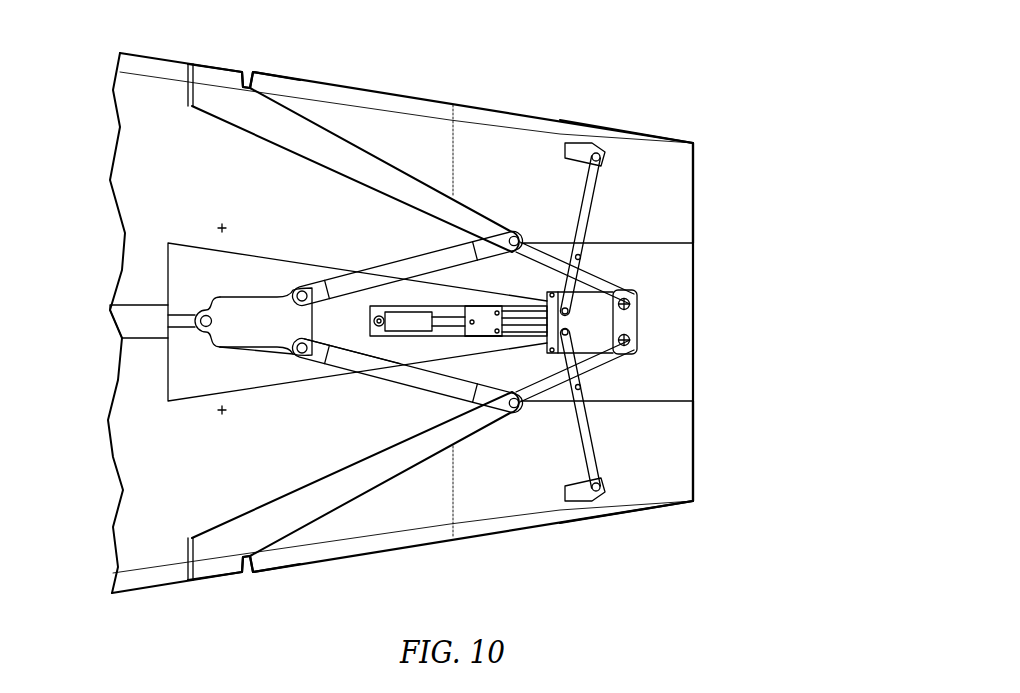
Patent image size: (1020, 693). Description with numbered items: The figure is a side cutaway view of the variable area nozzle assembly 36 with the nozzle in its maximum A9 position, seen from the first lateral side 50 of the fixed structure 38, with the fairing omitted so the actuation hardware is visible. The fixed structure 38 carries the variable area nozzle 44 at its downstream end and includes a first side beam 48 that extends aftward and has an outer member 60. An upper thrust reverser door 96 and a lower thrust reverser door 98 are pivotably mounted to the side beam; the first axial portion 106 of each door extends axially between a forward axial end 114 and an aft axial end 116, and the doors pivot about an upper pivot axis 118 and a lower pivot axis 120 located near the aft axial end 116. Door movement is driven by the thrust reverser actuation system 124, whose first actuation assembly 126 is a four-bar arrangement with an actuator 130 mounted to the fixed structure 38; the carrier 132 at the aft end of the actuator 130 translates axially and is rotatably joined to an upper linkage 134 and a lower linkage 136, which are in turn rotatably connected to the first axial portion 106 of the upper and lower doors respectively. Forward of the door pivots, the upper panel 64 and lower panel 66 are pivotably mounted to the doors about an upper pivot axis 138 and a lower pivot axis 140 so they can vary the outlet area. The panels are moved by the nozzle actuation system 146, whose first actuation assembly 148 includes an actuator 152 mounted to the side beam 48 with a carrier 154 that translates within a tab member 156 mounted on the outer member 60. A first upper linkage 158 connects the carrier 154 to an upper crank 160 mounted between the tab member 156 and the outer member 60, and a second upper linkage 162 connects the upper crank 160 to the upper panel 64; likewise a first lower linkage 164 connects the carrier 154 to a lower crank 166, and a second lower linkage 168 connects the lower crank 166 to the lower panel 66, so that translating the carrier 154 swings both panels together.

The variable area nozzle assembly 36 is at (736, 108).
The fixed structure 38 is at (153, 160).
The variable area nozzle 44 is at (608, 116).
The first side beam 48 is at (262, 489).
The first lateral side 50 is at (168, 380).
The outer member 60 is at (343, 457).
The upper panel 64 is at (654, 156).
The lower panel 66 is at (656, 498).
The upper thrust reverser door 96 is at (220, 77).
The lower thrust reverser door 98 is at (220, 566).
The first axial portion 106 is at (385, 178).
The forward axial end 114 is at (188, 55).
The aft axial end 116 is at (647, 290).
The upper pivot axis 118 is at (640, 305).
The lower pivot axis 120 is at (640, 345).
The thrust reverser actuation system 124 is at (258, 360).
The first actuation assembly 126 is at (337, 384).
The actuator 130 is at (143, 315).
The carrier 132 is at (268, 310).
The upper linkage 134 is at (365, 268).
The lower linkage 136 is at (388, 374).
The upper pivot axis 138 is at (222, 224).
The lower pivot axis 140 is at (222, 414).
The nozzle actuation system 146 is at (612, 262).
The first actuation assembly 148 is at (643, 428).
The actuator 152 is at (415, 317).
The carrier 154 is at (480, 327).
The tab member 156 is at (553, 356).
The first upper linkage 158 is at (527, 313).
The upper crank 160 is at (545, 302).
The second upper linkage 162 is at (593, 192).
The first lower linkage 164 is at (520, 332).
The lower crank 166 is at (583, 360).
The second lower linkage 168 is at (592, 467).